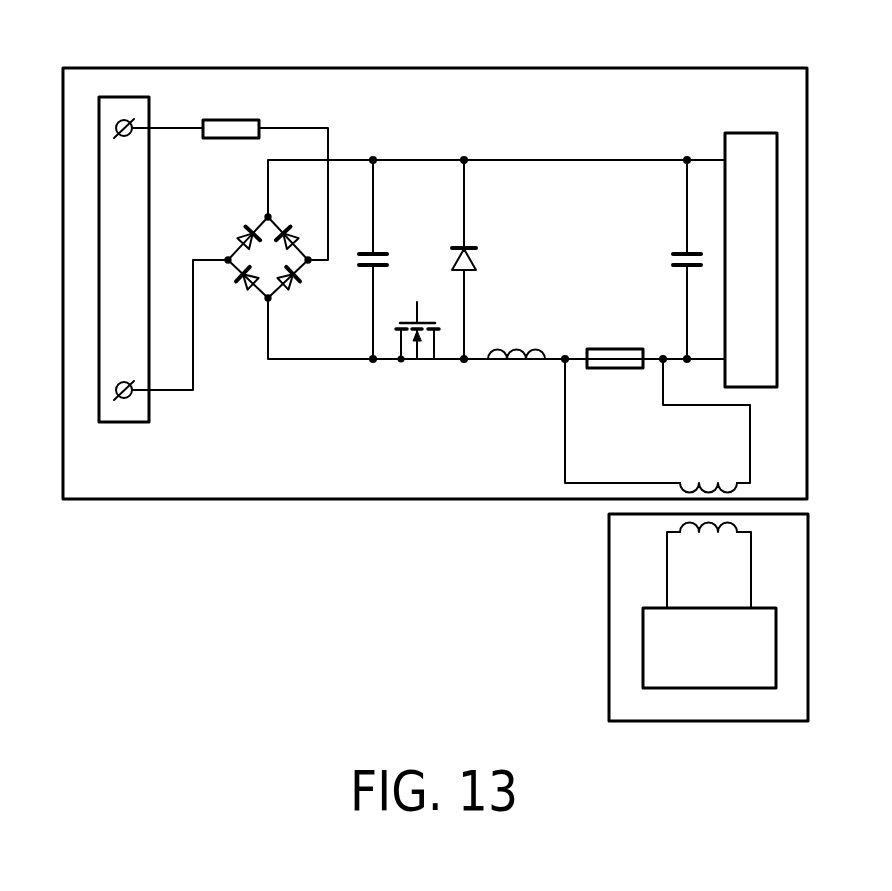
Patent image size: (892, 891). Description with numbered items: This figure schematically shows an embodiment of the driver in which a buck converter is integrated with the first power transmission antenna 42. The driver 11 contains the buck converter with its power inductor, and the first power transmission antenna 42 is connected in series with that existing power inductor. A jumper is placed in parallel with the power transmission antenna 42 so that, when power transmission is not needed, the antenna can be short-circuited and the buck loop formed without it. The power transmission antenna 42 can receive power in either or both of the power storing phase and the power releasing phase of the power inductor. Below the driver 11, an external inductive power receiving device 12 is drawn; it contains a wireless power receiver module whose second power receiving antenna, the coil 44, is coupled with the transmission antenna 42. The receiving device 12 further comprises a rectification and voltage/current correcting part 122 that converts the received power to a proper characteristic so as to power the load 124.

The lighting device / LED driver circuit 11 is at (435, 68).
The external inductive power receiving device 12 is at (609, 618).
The first power transmission antenna 42 is at (717, 482).
The receiver coil / inductor 44 is at (716, 531).
The rectification and voltage/current correcting part 122 is at (709, 648).
The load 124 is at (665, 664).